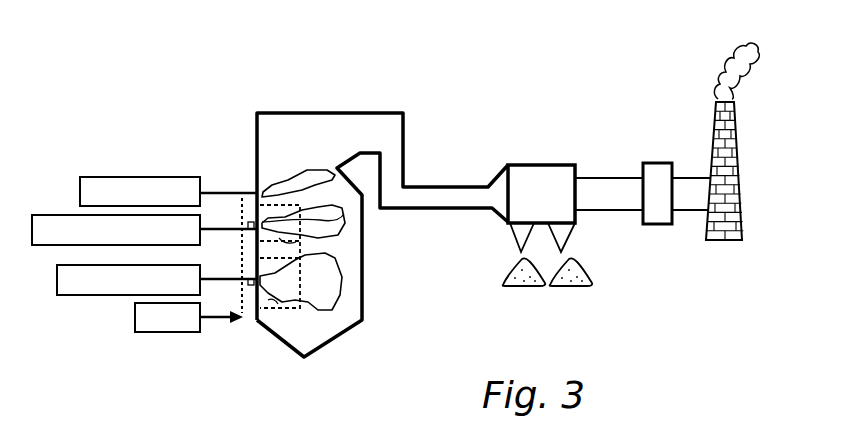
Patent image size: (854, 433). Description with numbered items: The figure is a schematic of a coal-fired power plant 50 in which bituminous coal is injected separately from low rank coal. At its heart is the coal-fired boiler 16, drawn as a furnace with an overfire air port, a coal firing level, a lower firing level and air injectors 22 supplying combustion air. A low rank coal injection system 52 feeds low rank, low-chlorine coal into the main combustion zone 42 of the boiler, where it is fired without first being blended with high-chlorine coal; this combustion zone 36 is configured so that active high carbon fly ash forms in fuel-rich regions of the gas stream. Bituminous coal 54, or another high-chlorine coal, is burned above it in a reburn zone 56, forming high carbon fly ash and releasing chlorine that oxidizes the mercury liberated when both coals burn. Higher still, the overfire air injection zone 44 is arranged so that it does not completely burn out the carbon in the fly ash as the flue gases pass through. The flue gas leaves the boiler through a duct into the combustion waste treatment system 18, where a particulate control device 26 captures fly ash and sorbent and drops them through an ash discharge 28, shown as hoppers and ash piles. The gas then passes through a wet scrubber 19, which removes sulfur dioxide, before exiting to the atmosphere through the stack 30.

The power plant 50 is at (172, 74).
The coal-fired boiler 16 is at (362, 293).
The combustion waste treatment system 18 is at (499, 104).
The wet scrubber 19 is at (658, 177).
The air injectors 22 is at (243, 323).
The particulate control device (PCD) 26 is at (530, 165).
The ash discharge 28 is at (578, 279).
The stack 30 is at (738, 167).
The combustion zone 36 is at (328, 278).
The main combustion zone 42 is at (279, 310).
The overfire air (OFA) injection zone 44 is at (257, 190).
The low rank coal injection system 52 is at (57, 285).
The bituminous coal 54 is at (32, 230).
The reburn zone 56 is at (288, 226).